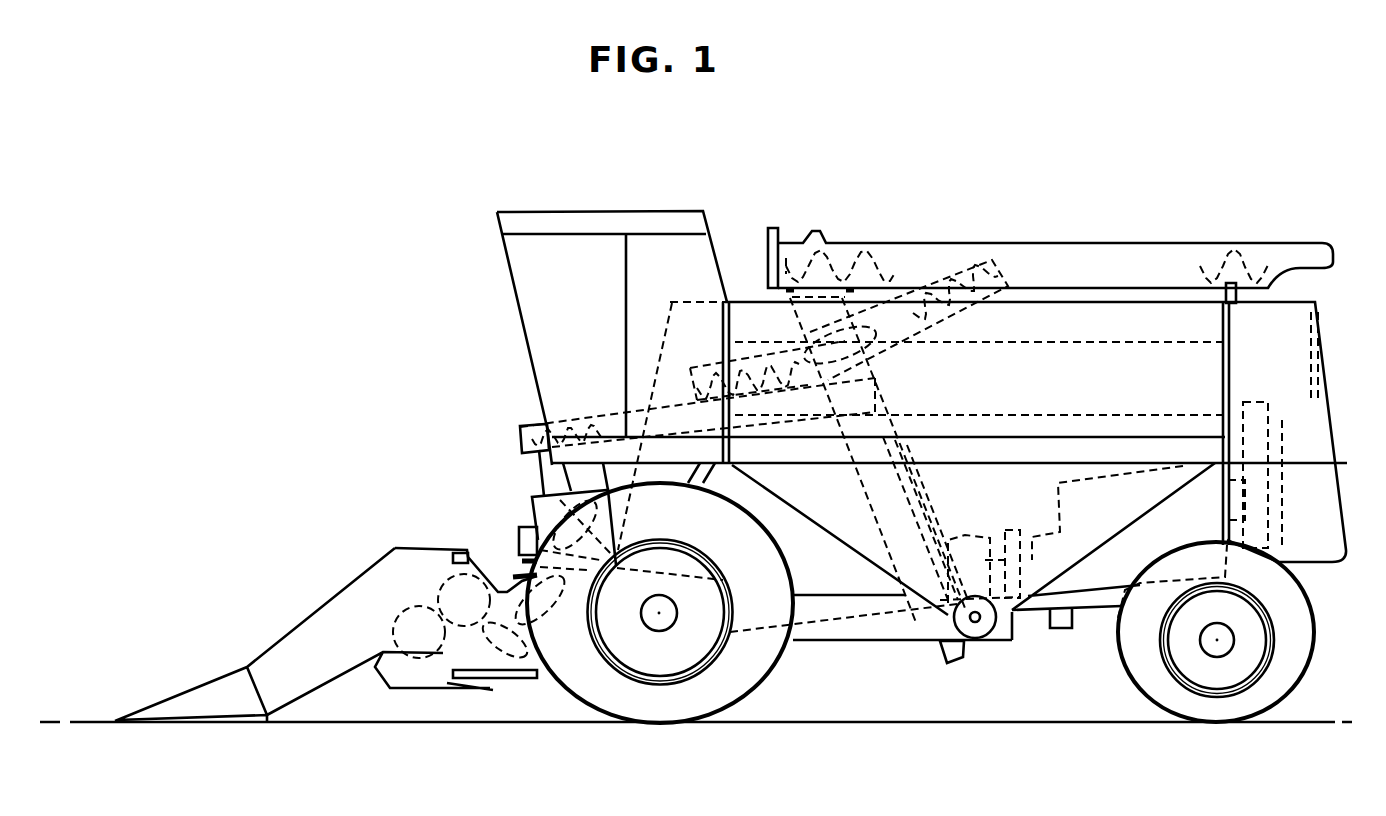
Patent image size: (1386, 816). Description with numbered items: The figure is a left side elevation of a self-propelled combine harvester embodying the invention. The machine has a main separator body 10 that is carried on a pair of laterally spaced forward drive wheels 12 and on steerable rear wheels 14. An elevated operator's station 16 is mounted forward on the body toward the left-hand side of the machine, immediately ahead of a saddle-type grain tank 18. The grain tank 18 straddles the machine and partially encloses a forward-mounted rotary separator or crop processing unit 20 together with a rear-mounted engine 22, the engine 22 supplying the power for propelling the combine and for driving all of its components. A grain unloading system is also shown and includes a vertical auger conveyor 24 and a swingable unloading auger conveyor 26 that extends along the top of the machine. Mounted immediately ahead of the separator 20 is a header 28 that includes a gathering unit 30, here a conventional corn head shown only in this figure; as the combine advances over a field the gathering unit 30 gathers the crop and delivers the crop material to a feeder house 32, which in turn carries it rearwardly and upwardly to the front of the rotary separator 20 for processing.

The main separator body 10 is at (1005, 232).
The forward drive wheels 12 is at (757, 680).
The steerable rear wheels 14 is at (1292, 692).
The operator's station 16 is at (583, 210).
The saddle-type grain tank 18 is at (757, 302).
The rotary separator 20 is at (533, 496).
The engine 22 is at (1053, 497).
The vertical auger conveyor 24 is at (883, 382).
The unloading auger conveyor 26 is at (1122, 244).
The header 28 is at (300, 588).
The gathering unit 30 is at (293, 652).
The feeder house 32 is at (500, 585).